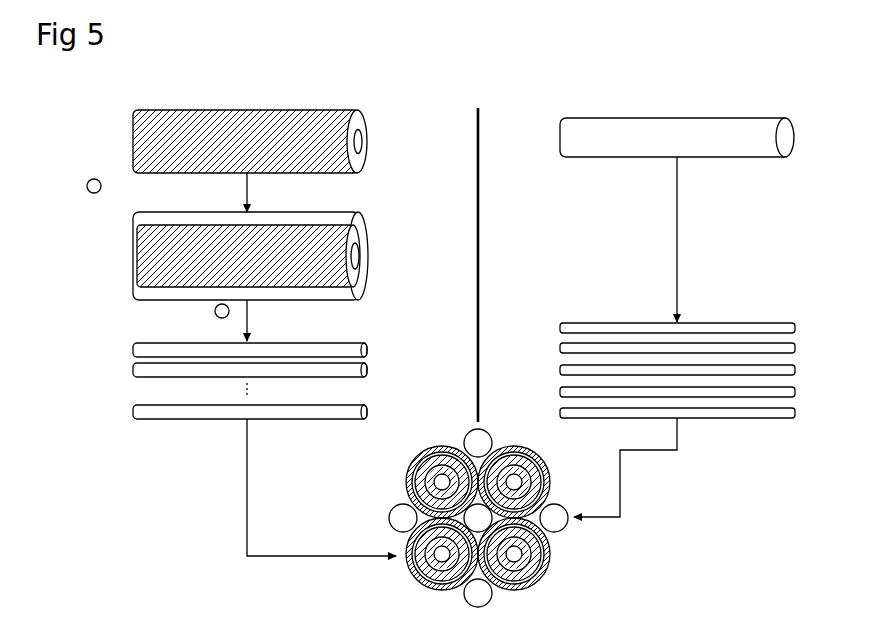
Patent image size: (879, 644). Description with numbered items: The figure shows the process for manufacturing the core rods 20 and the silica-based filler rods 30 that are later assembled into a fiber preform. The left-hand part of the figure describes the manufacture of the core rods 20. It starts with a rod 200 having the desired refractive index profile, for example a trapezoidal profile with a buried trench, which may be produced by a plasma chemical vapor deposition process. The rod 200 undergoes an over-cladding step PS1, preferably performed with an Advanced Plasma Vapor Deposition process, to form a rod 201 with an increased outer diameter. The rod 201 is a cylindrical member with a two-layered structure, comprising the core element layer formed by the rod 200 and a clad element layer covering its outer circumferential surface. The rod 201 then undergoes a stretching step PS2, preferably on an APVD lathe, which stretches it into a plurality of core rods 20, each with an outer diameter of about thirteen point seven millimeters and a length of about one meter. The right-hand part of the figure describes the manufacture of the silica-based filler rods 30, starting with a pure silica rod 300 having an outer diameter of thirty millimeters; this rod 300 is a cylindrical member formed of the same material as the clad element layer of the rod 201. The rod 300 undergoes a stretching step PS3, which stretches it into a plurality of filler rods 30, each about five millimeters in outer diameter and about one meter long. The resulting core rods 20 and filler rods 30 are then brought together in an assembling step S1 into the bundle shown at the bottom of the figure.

The rod 200 is at (262, 108).
The rod 201 is at (366, 223).
The core rods 20 is at (147, 420).
The pure silica rod 300 is at (673, 116).
The silica-based filler rods 30 is at (762, 420).
The over-cladding step PS1 is at (78, 179).
The stretching step PS2 is at (87, 306).
The stretching step PS3 is at (680, 237).
The assembling step S1 is at (291, 558).